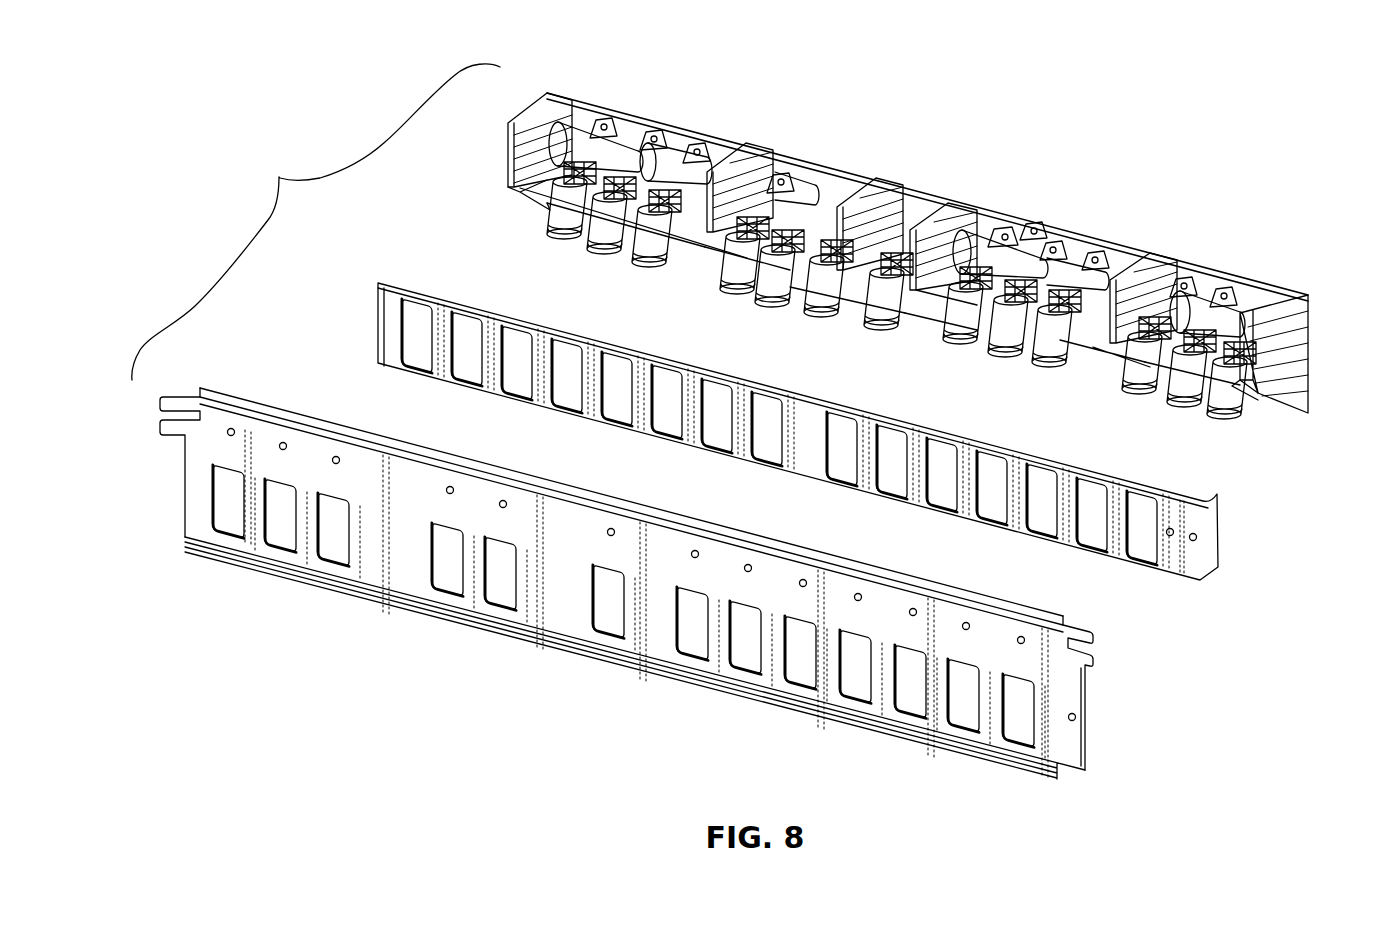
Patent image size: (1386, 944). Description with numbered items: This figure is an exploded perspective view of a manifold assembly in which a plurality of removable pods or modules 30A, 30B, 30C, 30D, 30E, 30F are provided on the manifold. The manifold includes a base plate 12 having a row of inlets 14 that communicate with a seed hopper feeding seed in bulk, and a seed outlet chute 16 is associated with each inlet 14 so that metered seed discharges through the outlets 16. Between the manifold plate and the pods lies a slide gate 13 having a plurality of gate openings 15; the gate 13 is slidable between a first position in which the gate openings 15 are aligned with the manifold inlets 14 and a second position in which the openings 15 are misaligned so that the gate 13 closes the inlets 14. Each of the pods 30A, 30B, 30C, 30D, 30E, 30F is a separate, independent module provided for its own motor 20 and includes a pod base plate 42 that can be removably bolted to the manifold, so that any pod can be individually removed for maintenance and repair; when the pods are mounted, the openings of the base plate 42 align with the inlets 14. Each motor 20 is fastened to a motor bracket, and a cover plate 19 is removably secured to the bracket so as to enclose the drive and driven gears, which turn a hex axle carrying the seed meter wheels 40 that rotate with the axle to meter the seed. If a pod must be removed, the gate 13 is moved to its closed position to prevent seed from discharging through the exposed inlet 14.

The base plate 12 is at (560, 628).
The slide gate 13 is at (1220, 532).
The inlets 14 is at (232, 522).
The gate openings 15 is at (413, 355).
The seed outlet chute 16 is at (564, 252).
The cover plate 19 is at (545, 112).
The motor 20 is at (622, 147).
The pod 30A is at (596, 100).
The pod 30B is at (698, 128).
The pod 30C is at (794, 136).
The pod 30D is at (1016, 208).
The pod 30E is at (1121, 213).
The pod 30F is at (1277, 260).
The seed meter wheels 40 is at (527, 200).
The pod base plate 42 is at (1030, 225).